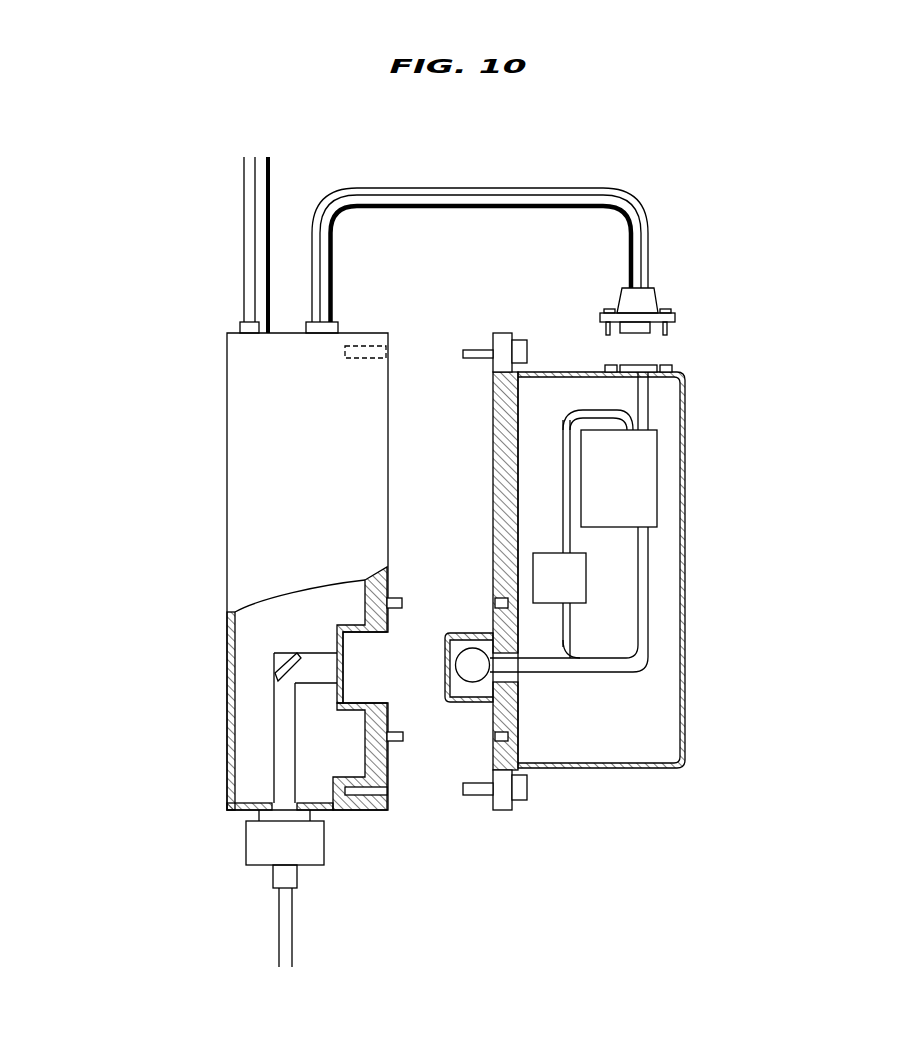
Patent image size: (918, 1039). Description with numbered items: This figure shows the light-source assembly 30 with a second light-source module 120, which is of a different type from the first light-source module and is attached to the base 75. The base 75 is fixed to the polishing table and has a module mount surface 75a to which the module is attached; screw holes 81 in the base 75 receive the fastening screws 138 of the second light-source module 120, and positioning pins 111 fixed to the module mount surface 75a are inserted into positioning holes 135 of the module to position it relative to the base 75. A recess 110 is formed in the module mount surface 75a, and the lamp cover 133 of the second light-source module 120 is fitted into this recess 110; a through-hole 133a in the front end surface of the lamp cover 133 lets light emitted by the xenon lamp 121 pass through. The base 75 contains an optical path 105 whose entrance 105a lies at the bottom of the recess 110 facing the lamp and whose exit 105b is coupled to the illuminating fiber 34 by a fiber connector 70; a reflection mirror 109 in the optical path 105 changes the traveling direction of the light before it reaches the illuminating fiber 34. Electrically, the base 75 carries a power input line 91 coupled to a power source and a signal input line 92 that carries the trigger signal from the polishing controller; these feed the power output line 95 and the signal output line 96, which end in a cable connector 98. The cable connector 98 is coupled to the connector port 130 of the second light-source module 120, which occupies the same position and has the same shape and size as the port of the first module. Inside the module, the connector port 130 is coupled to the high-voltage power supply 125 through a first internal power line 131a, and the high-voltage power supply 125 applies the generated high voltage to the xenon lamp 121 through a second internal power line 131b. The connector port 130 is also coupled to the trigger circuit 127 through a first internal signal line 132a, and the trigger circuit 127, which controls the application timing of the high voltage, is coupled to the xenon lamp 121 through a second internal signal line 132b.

The light-source assembly 30 is at (208, 395).
The illuminating fiber 34 is at (279, 932).
The fiber connector 70 is at (246, 845).
The base 75 is at (228, 523).
The module mount surface 75a is at (388, 505).
The screw holes 81 is at (372, 348).
The power input line 91 is at (245, 232).
The signal input line 92 is at (268, 197).
The power output line 95 is at (447, 190).
The signal output line 96 is at (437, 210).
The cable connector 98 is at (658, 298).
The optical path 105 is at (283, 720).
The entrance of the optical path 105a is at (338, 668).
The exit of the optical path 105b is at (283, 803).
The reflection mirror 109 is at (283, 660).
The recess 110 is at (343, 645).
The positioning pins 111 is at (397, 597).
The second light-source module 120 is at (685, 532).
The xenon lamp 121 is at (456, 667).
The high-voltage power supply 125 is at (658, 470).
The trigger circuit 127 is at (586, 580).
The connector port 130 is at (645, 363).
The first internal power line 131a is at (650, 403).
The second internal power line 131b is at (648, 597).
The first internal signal line 132a is at (585, 410).
The second internal signal line 132b is at (563, 648).
The lamp cover 133 is at (468, 633).
The through-hole 133a is at (446, 680).
The positioning holes 135 is at (495, 603).
The fastening screws 138 is at (527, 347).